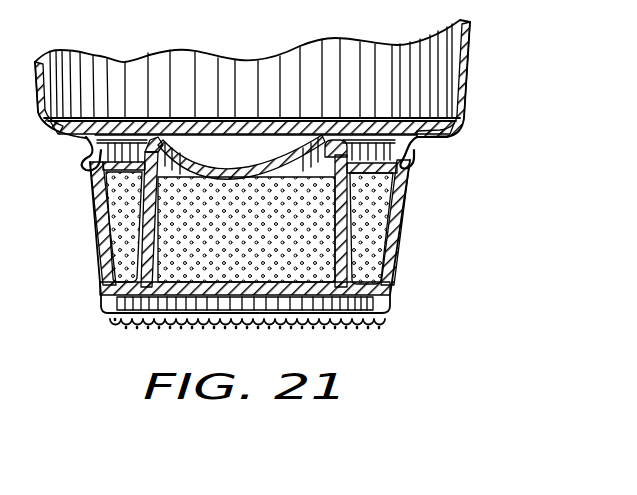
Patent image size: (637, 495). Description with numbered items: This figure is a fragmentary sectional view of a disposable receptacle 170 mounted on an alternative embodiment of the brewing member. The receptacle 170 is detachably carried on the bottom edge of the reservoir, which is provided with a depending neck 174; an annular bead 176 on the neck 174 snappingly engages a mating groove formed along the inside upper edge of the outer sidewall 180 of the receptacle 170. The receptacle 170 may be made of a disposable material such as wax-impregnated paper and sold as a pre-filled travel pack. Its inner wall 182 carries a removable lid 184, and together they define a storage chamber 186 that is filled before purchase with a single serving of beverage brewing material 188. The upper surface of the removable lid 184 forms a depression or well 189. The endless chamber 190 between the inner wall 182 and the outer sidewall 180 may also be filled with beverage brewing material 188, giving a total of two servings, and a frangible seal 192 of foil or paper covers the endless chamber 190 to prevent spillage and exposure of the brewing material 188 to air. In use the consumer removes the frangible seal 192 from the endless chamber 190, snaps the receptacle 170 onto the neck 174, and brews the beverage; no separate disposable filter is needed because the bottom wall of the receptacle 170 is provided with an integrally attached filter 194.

The receptacle 170 is at (97, 250).
The depending neck 174 is at (417, 143).
The annular bead 176 is at (86, 190).
The sidewall 180 is at (388, 247).
The inner wall 182 is at (352, 243).
The removable lid 184 is at (337, 140).
The storage chamber 186 is at (277, 313).
The beverage brewing material 188 is at (137, 203).
The well 189 is at (263, 157).
The endless chamber 190 is at (383, 186).
The frangible seal 192 is at (133, 150).
The filter 194 is at (205, 326).